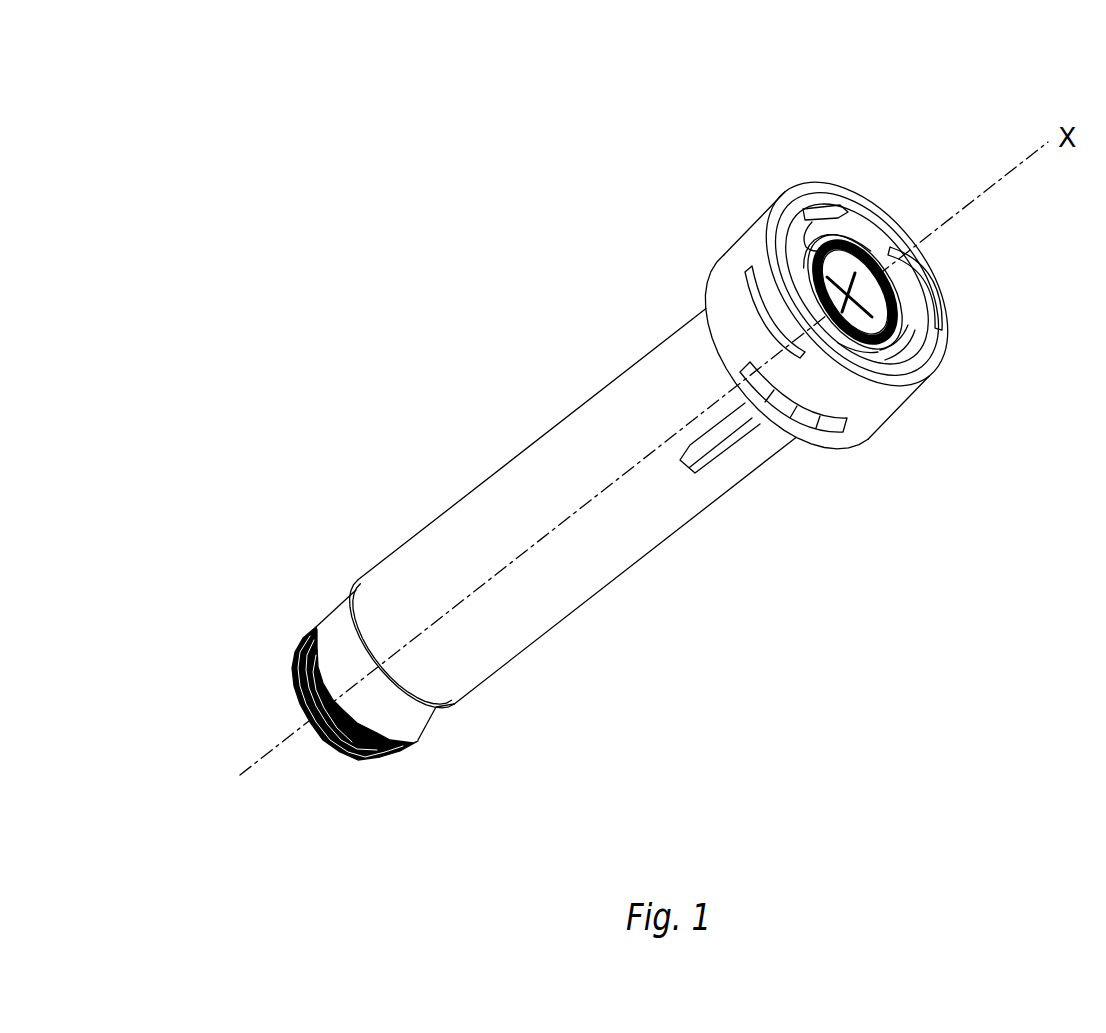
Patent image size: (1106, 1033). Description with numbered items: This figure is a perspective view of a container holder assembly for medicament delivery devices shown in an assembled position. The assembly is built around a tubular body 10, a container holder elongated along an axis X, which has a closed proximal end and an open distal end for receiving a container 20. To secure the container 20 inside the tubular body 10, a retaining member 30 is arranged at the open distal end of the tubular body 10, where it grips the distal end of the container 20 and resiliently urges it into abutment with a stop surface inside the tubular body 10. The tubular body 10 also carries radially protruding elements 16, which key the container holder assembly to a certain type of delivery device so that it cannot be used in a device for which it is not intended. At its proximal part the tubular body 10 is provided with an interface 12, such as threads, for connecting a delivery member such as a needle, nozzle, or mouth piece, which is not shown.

The tubular body 10 is at (523, 585).
The interface 12 is at (312, 627).
The radially protruding elements 16 is at (730, 549).
The container 20 is at (873, 255).
The retaining member 30 is at (812, 208).